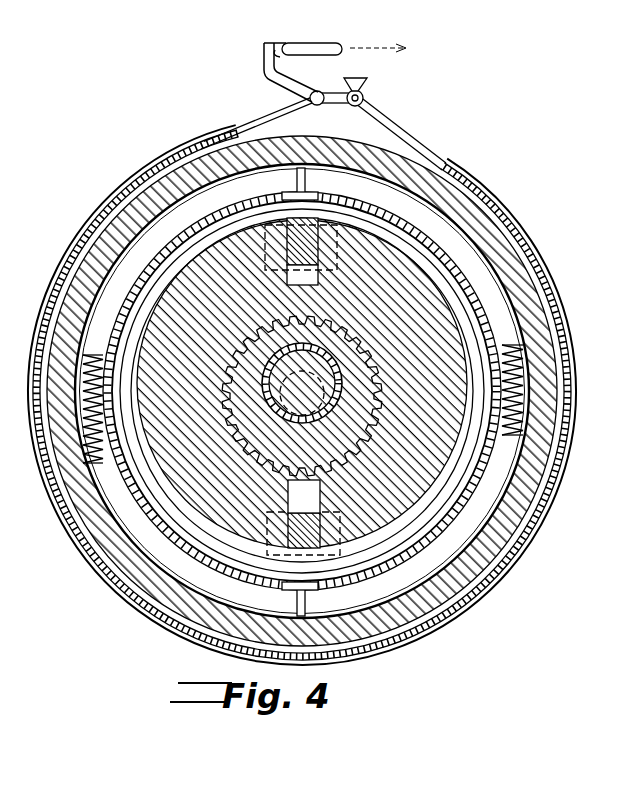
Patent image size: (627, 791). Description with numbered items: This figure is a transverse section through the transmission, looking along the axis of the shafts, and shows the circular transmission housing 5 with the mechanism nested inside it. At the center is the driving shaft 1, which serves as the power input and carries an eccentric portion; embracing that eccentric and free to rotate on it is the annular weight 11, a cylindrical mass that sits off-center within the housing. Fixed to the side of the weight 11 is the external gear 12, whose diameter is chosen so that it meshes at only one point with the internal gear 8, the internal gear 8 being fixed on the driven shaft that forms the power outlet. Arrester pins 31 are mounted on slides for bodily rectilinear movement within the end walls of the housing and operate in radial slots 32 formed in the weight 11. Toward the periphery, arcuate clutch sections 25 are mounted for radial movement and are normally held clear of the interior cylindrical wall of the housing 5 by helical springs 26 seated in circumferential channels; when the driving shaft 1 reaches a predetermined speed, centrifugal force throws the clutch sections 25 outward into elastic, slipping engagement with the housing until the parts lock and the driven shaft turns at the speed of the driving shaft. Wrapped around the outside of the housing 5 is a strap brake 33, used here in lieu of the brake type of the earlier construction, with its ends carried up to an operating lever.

The driving shaft 1 is at (280, 390).
The transmission housing 5 is at (367, 153).
The internal gear 8 is at (242, 447).
The weight 11 is at (202, 513).
The external gear 12 is at (273, 445).
The clutch sections 25 is at (158, 250).
The helical springs 26 is at (83, 348).
The arrester pins 31 is at (297, 238).
The radial slots 32 is at (304, 496).
The strap brake 33 is at (215, 147).